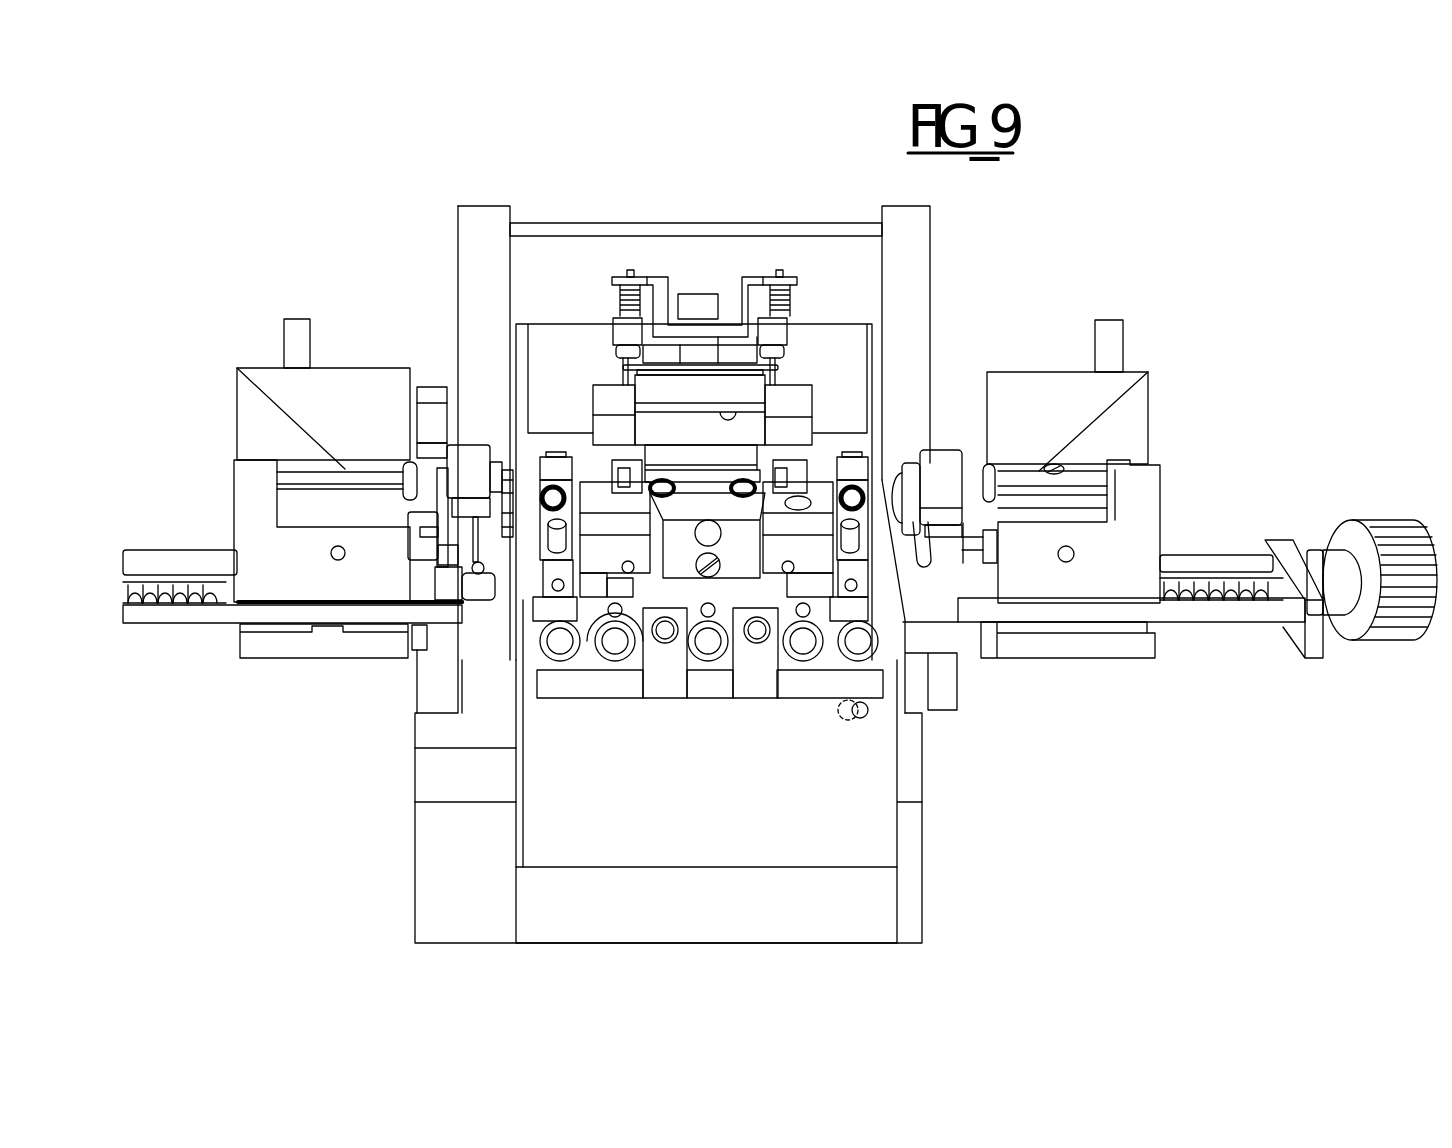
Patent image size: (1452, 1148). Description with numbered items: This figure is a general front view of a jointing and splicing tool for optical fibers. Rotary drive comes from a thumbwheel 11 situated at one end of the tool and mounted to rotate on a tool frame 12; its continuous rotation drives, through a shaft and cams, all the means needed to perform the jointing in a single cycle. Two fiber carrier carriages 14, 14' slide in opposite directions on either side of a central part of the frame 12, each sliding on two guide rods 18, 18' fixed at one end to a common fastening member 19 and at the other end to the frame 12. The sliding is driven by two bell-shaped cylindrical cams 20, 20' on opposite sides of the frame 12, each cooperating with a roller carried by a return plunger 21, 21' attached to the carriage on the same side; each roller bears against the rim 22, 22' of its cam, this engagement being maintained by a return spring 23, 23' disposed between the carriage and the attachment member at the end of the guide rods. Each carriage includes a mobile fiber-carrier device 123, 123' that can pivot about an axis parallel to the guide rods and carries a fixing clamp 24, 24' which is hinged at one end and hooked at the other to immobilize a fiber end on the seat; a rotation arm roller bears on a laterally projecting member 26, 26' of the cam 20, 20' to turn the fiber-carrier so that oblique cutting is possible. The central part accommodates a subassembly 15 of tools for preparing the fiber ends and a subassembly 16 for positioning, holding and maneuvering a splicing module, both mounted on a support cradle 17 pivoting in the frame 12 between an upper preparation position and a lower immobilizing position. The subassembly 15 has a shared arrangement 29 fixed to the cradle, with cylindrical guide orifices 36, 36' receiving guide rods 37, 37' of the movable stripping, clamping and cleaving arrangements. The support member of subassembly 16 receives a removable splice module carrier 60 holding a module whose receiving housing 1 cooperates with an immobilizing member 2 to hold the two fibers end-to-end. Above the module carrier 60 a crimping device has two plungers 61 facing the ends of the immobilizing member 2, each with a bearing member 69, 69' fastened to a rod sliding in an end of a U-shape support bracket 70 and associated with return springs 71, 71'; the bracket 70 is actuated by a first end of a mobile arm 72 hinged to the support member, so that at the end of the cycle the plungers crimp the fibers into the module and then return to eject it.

The receiving housing 1 is at (757, 428).
The immobilizing member 2 is at (793, 397).
The thumbwheel 11 is at (1393, 630).
The tool frame 12 is at (880, 903).
The fiber carrier carriage 14 is at (1087, 643).
The fiber carrier carriage 14' is at (324, 679).
The subassembly of fiber end preparation tools 15 is at (545, 688).
The subassembly for positioning, holding and maneuvering the splicing module 16 is at (850, 358).
The support cradle 17 is at (873, 440).
The guide rod 18 is at (1104, 590).
The guide rod 18' is at (292, 634).
The common fastening member 19 is at (1283, 543).
The bell-shaped cylindrical cam 20 is at (1091, 387).
The bell-shaped cylindrical cam 20' is at (323, 369).
The return plunger 21 is at (1061, 593).
The return plunger 21' is at (278, 518).
The rim of the bell-shaped cam 22 is at (1132, 422).
The rim of the bell-shaped cam 22' is at (248, 418).
The return spring 23 is at (1216, 523).
The return spring 23' is at (180, 632).
The fixing clamp 24 is at (947, 427).
The fixing clamp 24' is at (462, 432).
The laterally projecting member of the cam 26 is at (1128, 312).
The laterally projecting member of the cam 26' is at (291, 300).
The shared arrangement 29 is at (647, 660).
The cylindrical guide orifice 36 is at (727, 707).
The cylindrical guide orifice 36' is at (917, 748).
The guide rod 37 is at (684, 691).
The guide rod 37' is at (927, 768).
The splice module carrier 60 is at (598, 388).
The plunger 61 is at (622, 290).
The bearing member 69 is at (744, 312).
The bearing member 69' is at (614, 274).
The U-shape support bracket 70 is at (738, 293).
The return spring 71 is at (718, 271).
The return spring 71' is at (700, 225).
The mobile arm 72 is at (693, 298).
The mobile fiber-carrier device 123 is at (956, 643).
The mobile fiber-carrier device 123' is at (425, 624).